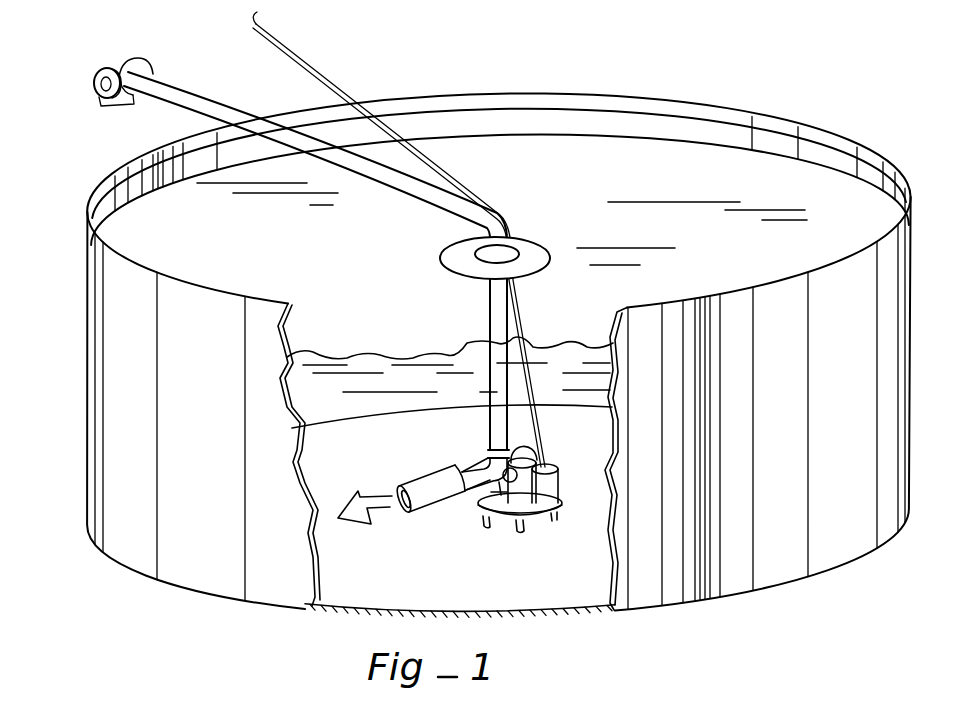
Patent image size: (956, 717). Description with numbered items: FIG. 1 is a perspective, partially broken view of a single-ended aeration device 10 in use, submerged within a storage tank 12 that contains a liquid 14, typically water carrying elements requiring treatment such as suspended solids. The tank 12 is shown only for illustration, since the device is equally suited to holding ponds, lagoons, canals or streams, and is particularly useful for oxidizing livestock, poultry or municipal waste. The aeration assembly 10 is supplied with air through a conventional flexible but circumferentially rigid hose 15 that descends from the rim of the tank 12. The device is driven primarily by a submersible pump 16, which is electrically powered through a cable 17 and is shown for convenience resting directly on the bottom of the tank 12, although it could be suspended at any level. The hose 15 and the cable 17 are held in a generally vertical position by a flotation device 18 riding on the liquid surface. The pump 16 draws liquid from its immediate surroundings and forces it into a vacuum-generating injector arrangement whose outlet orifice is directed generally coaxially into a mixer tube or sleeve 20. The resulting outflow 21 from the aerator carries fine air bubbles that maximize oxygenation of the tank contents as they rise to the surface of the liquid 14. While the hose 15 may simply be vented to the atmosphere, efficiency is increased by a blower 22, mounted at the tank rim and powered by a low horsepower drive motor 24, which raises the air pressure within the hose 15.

The aeration device 10 is at (459, 456).
The storage tank 12 is at (665, 97).
The liquid 14 is at (515, 143).
The hose 15 is at (207, 107).
The submersible pump 16 is at (557, 467).
The cable 17 is at (311, 76).
The flotation device 18 is at (446, 254).
The mixer tube 20 is at (435, 500).
The outflow 21 is at (352, 492).
The blower 22 is at (96, 79).
The drive motor 24 is at (139, 62).